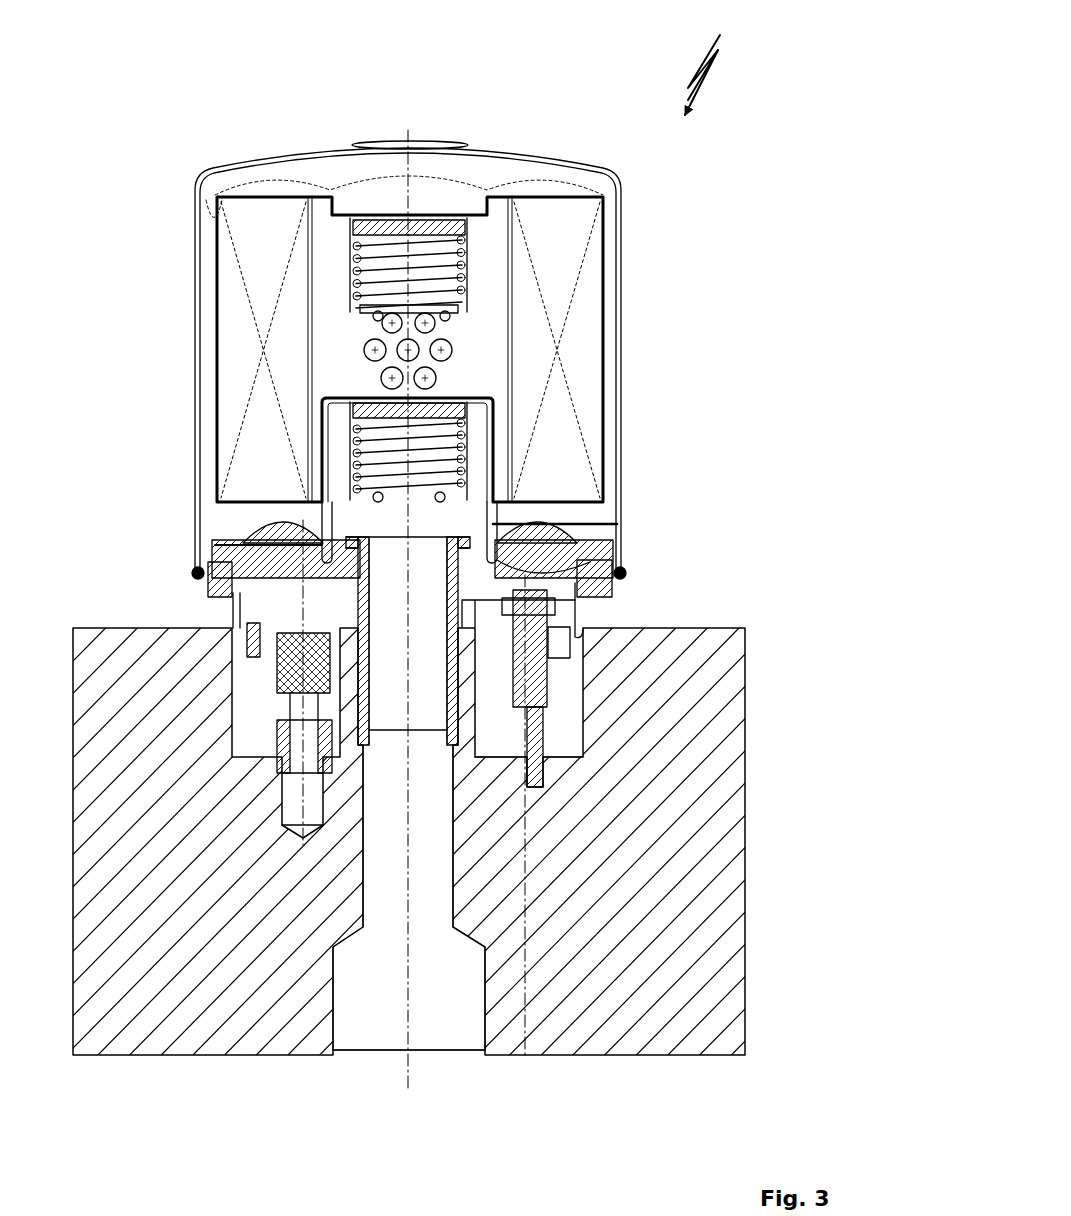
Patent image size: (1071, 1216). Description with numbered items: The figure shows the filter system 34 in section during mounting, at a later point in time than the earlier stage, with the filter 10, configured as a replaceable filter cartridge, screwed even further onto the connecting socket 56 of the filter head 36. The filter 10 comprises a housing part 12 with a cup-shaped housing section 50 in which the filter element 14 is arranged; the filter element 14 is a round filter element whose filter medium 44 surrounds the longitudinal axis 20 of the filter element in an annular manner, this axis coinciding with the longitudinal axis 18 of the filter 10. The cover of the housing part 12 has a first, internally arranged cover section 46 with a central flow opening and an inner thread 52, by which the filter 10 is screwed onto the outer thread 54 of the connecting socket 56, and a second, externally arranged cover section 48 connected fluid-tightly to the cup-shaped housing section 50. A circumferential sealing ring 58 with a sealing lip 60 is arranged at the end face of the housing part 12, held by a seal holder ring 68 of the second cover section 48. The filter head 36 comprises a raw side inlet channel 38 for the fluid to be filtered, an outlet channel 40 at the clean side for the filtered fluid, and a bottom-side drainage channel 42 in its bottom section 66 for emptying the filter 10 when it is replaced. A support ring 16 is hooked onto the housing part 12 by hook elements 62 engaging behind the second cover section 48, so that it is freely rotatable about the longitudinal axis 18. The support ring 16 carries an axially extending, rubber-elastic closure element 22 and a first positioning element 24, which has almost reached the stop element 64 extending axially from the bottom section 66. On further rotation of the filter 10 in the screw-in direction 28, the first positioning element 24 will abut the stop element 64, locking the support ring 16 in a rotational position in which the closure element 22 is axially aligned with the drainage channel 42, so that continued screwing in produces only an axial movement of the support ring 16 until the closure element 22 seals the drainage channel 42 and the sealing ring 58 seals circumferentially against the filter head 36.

The filter 10 is at (638, 303).
The housing part 12 is at (623, 352).
The filter element 14 is at (590, 272).
The support ring 16 is at (487, 623).
The longitudinal axis 18 is at (412, 1033).
The longitudinal axis 20 is at (408, 836).
The closure element 22 is at (313, 793).
The first positioning element 24 is at (527, 675).
The screw-in direction 28 is at (396, 148).
The filter system 34 is at (713, 62).
The filter head 36 is at (664, 732).
The raw side inlet channel 38 is at (573, 677).
The outlet channel 40 is at (408, 702).
The drainage channel 42 is at (287, 652).
The filter medium 44 is at (593, 385).
The first cover section 46 is at (577, 547).
The second cover section 48 is at (598, 583).
The cup-shaped housing section 50 is at (166, 143).
The inner thread 52 is at (497, 505).
The outer thread 54 is at (340, 553).
The connecting socket 56 is at (364, 626).
The sealing ring 58 is at (627, 575).
The sealing lip 60 is at (590, 590).
The hook elements 62 is at (199, 573).
The stop element 64 is at (538, 740).
The bottom section 66 is at (505, 760).
The seal holder ring 68 is at (233, 572).